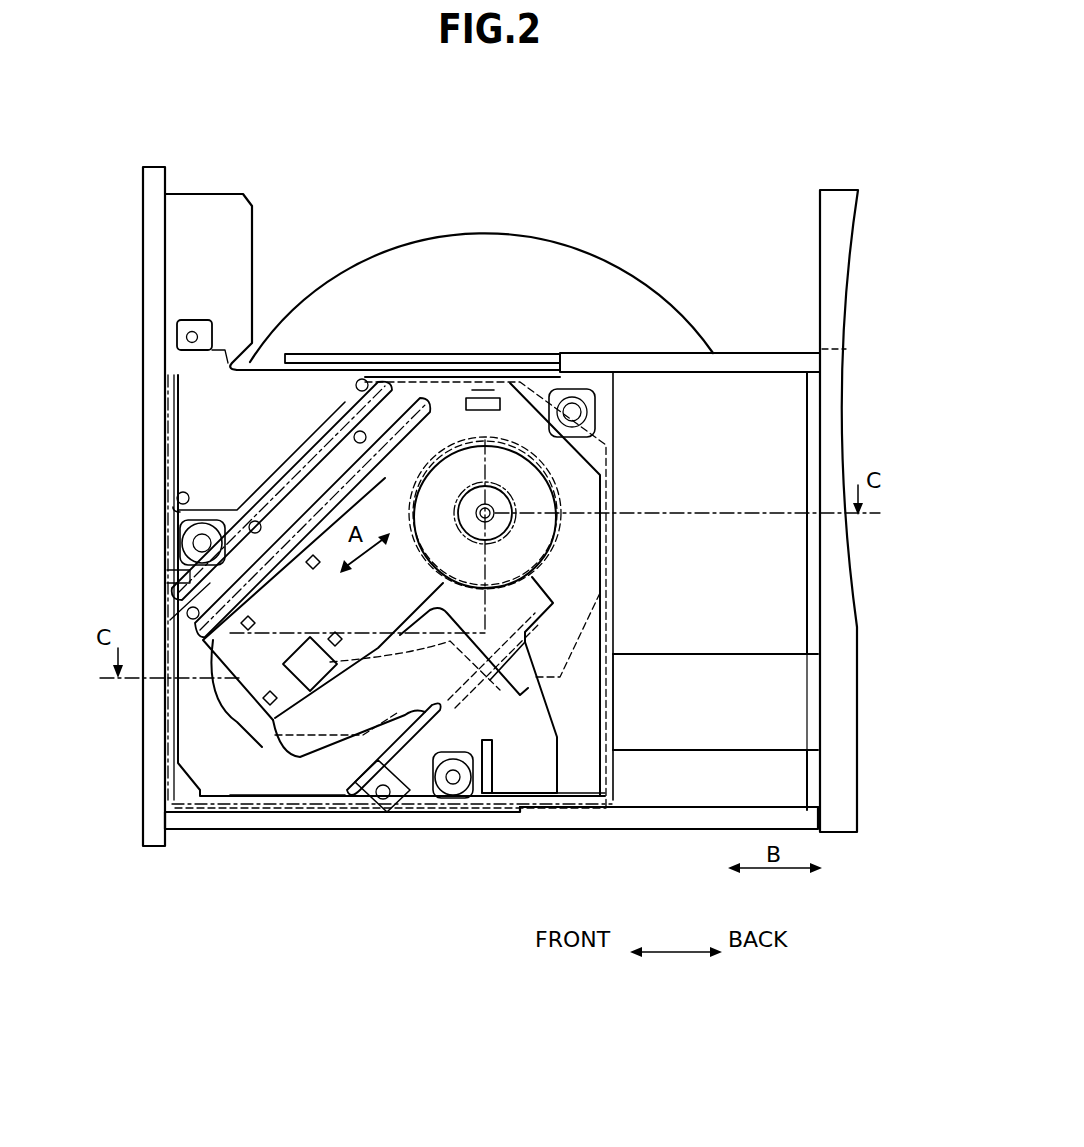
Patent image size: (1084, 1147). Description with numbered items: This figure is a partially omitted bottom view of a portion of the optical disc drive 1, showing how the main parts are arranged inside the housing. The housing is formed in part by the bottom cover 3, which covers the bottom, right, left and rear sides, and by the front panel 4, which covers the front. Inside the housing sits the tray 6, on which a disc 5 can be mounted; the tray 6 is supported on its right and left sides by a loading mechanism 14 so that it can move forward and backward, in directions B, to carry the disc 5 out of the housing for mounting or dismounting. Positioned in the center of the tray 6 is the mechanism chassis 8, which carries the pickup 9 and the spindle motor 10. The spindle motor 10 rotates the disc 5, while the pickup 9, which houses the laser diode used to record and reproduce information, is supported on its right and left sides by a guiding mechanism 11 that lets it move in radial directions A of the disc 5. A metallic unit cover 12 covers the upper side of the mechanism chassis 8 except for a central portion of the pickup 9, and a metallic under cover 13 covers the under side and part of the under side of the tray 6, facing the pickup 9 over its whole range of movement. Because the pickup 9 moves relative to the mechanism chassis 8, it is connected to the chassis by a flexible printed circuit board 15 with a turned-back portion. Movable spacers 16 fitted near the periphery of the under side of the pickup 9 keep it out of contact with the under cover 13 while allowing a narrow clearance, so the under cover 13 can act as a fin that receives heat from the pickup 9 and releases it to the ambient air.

The optical disc drive 1 is at (490, 166).
The bottom cover 3 is at (833, 272).
The front panel 4 is at (158, 232).
The disc 5 is at (566, 285).
The tray 6 is at (713, 440).
The mechanism chassis 8 is at (490, 440).
The pickup 9 is at (300, 695).
The spindle motor 10 is at (486, 497).
The guiding mechanism 11 is at (343, 500).
The unit cover 12 is at (413, 485).
The under cover 13 is at (610, 440).
The loading mechanism 14 is at (536, 820).
The flexible printed circuit board 15 is at (525, 743).
The movable spacers 16 is at (270, 698).